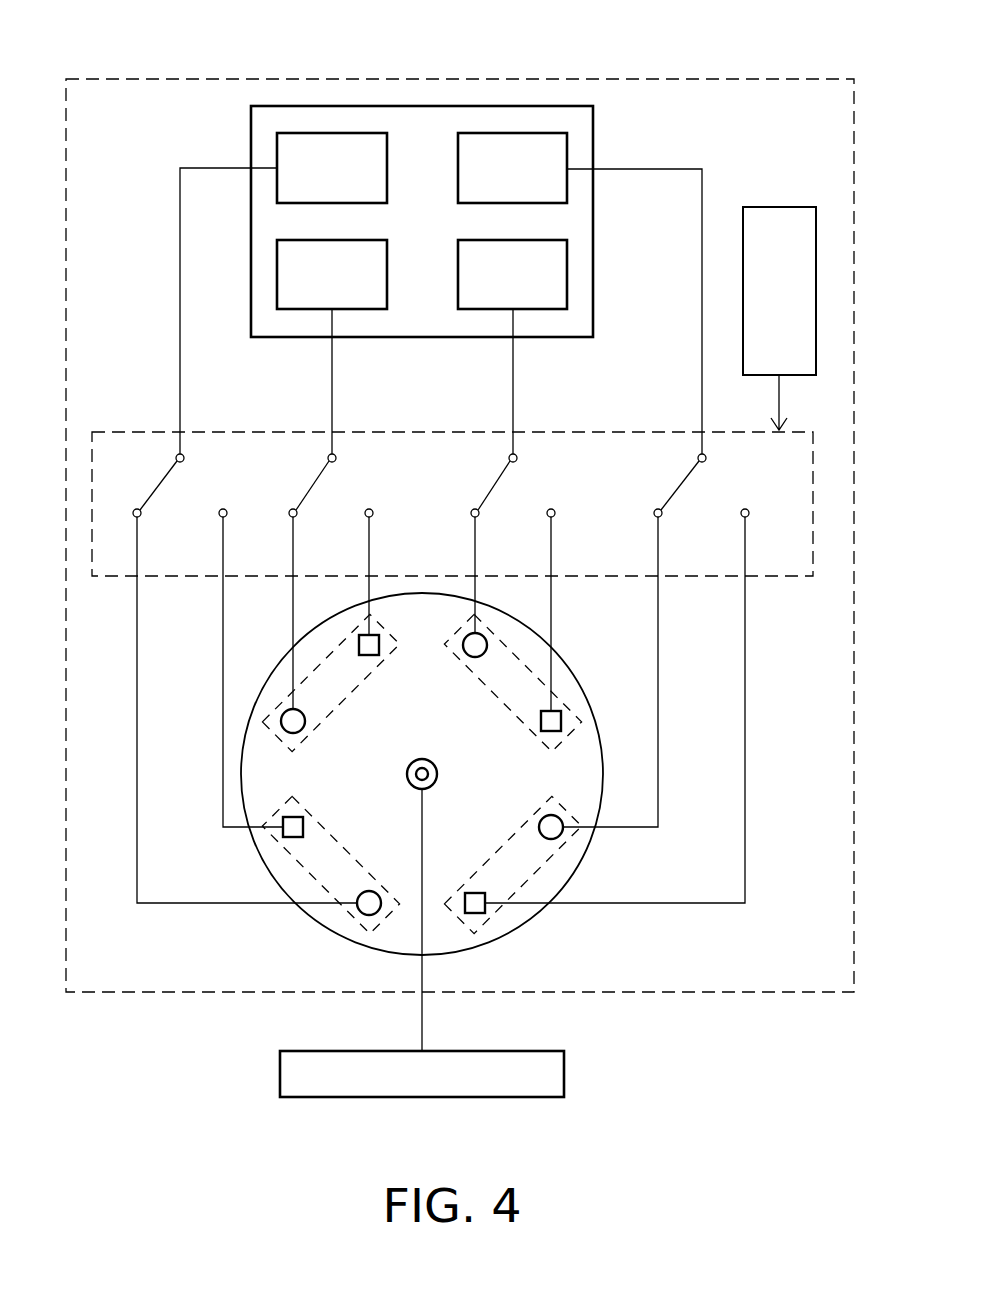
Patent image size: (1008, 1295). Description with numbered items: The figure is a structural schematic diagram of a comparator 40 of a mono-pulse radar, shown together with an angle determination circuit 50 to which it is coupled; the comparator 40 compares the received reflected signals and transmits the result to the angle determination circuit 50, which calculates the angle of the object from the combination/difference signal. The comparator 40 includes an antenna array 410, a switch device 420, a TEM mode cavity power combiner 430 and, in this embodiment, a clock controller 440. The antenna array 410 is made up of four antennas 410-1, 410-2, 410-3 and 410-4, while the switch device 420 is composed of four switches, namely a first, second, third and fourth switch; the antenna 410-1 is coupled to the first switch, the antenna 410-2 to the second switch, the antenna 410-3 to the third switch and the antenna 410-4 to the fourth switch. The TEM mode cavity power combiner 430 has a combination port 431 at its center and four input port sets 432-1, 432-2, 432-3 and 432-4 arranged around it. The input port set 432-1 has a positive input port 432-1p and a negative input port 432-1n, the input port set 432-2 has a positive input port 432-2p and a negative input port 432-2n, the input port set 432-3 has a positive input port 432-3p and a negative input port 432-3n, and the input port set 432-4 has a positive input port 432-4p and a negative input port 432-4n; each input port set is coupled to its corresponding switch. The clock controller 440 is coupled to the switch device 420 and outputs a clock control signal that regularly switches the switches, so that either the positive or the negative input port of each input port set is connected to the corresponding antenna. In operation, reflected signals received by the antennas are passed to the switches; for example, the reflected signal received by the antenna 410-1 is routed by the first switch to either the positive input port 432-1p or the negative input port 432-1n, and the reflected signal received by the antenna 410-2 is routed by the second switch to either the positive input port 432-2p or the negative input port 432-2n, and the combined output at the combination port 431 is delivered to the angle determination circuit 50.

The comparator 40 is at (813, 992).
The angle determination circuit 50 is at (565, 1072).
The antenna array 410 is at (595, 120).
The antenna 410-1 is at (350, 133).
The antenna 410-2 is at (303, 309).
The antenna 410-3 is at (512, 133).
The antenna 410-4 is at (547, 309).
The switch device 420 is at (645, 430).
The TEM mode cavity power combiner 430 is at (388, 955).
The combination port 431 is at (440, 773).
The input port set 432-1 is at (293, 853).
The negative input port 432-1n is at (303, 817).
The positive input port 432-1p is at (363, 914).
The input port set 432-2 is at (263, 744).
The negative input port 432-2n is at (377, 635).
The positive input port 432-2p is at (285, 712).
The input port set 432-3 is at (592, 748).
The negative input port 432-3n is at (557, 710).
The positive input port 432-3p is at (470, 660).
The input port set 432-4 is at (470, 958).
The negative input port 432-4n is at (487, 908).
The positive input port 432-4p is at (560, 838).
The clock controller 440 is at (779, 207).